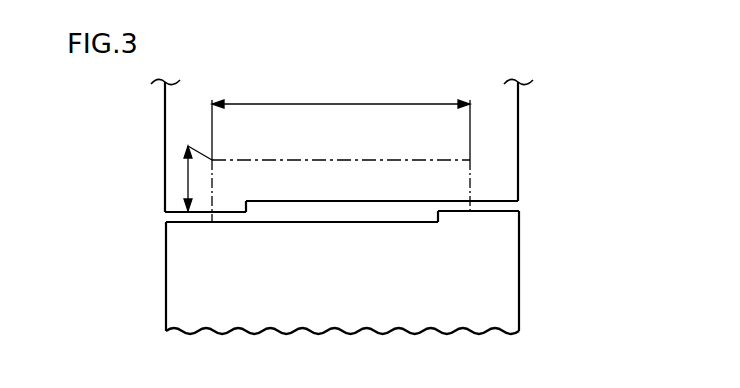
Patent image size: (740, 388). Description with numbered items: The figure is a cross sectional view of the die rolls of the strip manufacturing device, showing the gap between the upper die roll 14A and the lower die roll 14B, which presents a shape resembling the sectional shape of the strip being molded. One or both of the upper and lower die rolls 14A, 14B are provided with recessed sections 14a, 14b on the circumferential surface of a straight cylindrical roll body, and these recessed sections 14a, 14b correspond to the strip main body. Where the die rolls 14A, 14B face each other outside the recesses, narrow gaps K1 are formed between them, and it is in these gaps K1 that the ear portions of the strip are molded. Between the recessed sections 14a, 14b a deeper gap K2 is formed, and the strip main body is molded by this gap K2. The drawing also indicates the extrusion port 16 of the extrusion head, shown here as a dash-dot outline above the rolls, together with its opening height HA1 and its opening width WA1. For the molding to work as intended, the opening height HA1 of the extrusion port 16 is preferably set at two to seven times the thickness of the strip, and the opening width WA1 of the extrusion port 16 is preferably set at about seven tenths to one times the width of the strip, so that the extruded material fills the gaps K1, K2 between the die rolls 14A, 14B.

The upper die roll 14A is at (500, 161).
The lower die roll 14B is at (500, 285).
The recessed section 14a is at (410, 203).
The recessed section 14b is at (341, 222).
The extrusion port 16 is at (427, 158).
The gap K1 is at (212, 214).
The gap K2 is at (386, 212).
The opening width WA1 is at (340, 103).
The opening height HA1 is at (187, 177).